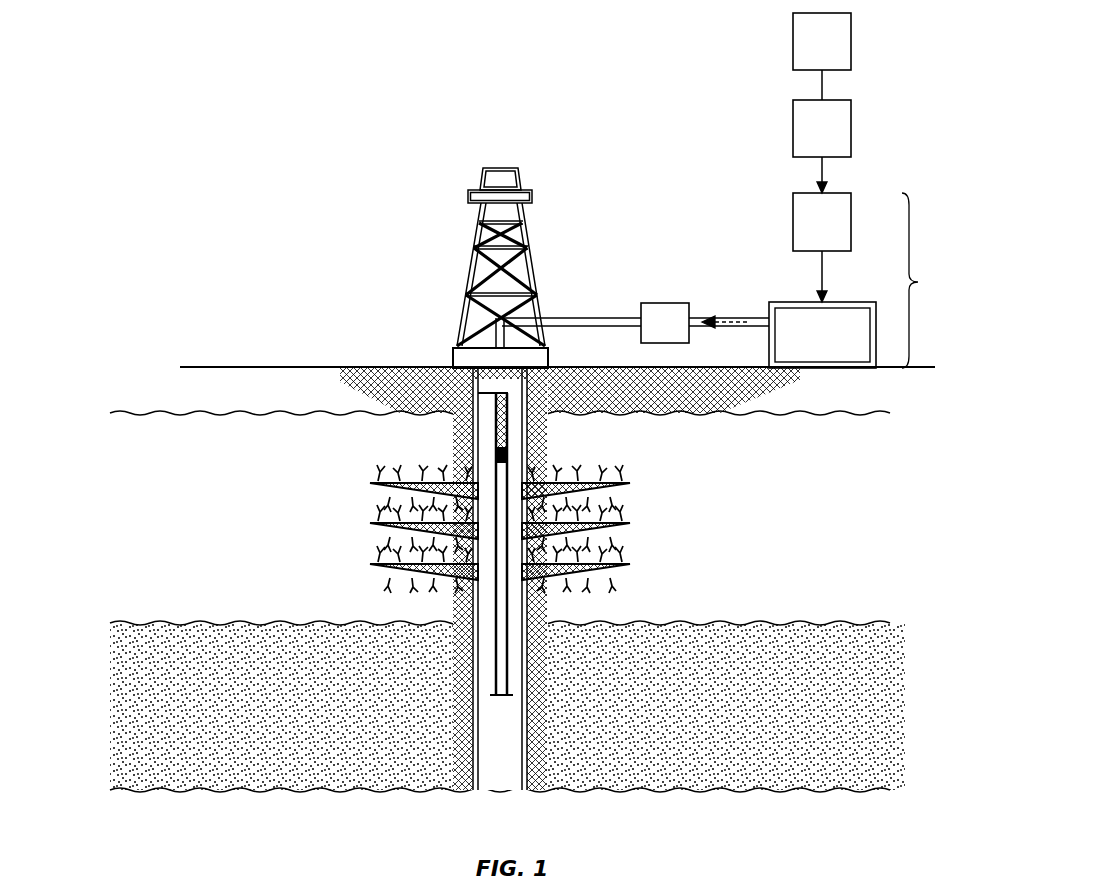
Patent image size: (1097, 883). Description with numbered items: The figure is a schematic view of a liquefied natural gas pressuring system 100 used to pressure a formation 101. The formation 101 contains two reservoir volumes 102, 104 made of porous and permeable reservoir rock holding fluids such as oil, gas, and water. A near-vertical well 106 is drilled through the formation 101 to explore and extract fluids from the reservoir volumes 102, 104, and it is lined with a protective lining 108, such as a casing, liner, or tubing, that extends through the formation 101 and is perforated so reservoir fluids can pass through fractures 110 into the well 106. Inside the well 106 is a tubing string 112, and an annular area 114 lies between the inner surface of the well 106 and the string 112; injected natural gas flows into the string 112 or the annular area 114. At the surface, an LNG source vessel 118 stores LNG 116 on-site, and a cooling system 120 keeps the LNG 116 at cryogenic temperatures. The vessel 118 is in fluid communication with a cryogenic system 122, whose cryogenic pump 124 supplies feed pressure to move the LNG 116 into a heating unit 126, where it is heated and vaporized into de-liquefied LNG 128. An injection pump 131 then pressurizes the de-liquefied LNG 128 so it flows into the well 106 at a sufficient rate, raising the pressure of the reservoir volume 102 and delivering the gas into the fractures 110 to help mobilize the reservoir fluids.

The LNG pressuring system 100 is at (749, 174).
The formation 101 is at (90, 387).
The reservoir volume 102 is at (105, 413).
The reservoir volume 104 is at (105, 632).
The well 106 is at (487, 450).
The protective lining 108 is at (525, 437).
The fractures 110 is at (365, 454).
The tubing string 112 is at (500, 452).
The annular area 114 is at (487, 392).
The LNG 116 is at (823, 172).
The LNG source vessel 118 is at (840, 140).
The cooling system 120 is at (840, 53).
The cryogenic system 122 is at (931, 280).
The cryogenic pump 124 is at (840, 234).
The heating unit 126 is at (840, 346).
The de-liquefied LNG 128 is at (728, 317).
The injection pump 131 is at (648, 334).